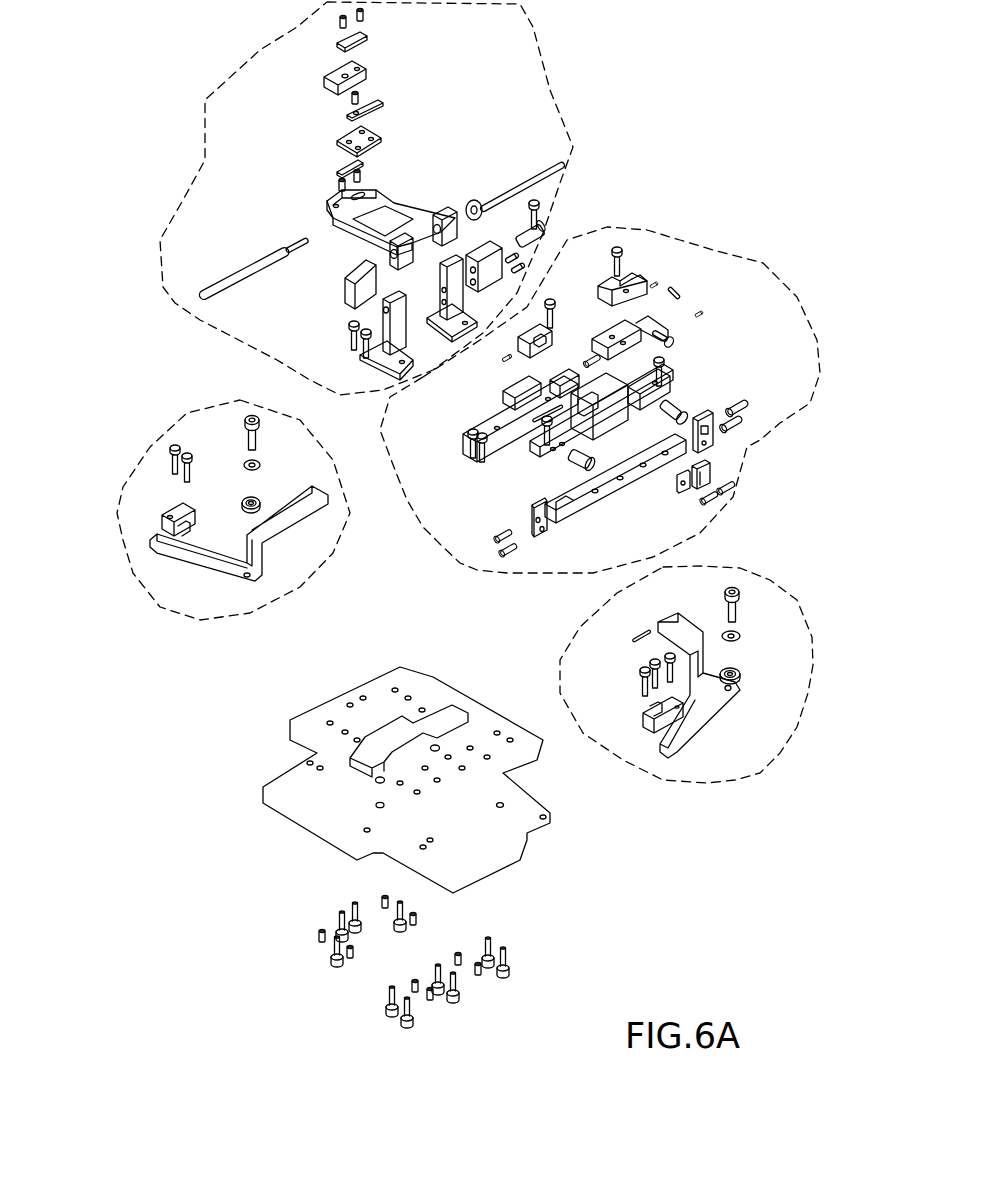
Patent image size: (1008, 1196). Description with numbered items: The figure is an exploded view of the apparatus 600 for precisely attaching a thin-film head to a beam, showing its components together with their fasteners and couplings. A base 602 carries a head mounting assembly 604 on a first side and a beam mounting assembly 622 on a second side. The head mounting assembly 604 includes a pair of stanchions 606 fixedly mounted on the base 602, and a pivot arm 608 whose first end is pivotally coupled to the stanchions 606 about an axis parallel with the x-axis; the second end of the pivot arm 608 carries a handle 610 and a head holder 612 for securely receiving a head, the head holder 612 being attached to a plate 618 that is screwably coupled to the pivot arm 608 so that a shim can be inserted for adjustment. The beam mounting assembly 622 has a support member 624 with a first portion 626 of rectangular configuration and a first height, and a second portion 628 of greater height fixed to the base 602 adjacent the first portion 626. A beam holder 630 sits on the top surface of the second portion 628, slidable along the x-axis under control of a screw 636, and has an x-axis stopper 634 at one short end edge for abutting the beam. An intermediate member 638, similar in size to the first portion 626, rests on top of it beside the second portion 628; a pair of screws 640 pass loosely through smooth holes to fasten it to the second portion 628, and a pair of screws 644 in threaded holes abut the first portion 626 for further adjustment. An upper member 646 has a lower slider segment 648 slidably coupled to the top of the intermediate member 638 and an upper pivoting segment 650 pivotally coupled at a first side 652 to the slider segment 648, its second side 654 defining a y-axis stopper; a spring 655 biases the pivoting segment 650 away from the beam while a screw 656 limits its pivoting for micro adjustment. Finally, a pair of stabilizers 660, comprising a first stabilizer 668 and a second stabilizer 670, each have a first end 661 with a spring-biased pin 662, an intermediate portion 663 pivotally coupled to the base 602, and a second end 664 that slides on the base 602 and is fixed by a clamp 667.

The apparatus 600 is at (747, 134).
The base 602 is at (322, 820).
The head mounting assembly 604 is at (163, 309).
The stanchions 606 is at (382, 352).
The pivot arm 608 is at (398, 207).
The handle 610 is at (238, 271).
The head holder 612 is at (412, 64).
The plate 618 is at (372, 128).
The beam mounting assembly 622 is at (803, 262).
The support member 624 is at (558, 520).
The first portion 626 is at (590, 510).
The second portion 628 is at (458, 440).
The beam holder 630 is at (500, 406).
The x-axis stopper 634 is at (548, 370).
The screw 636 is at (599, 324).
The intermediate member 638 is at (662, 398).
The screws 640 is at (700, 400).
The screws 644 is at (665, 362).
The upper member 646 is at (648, 282).
The lower slider segment 648 is at (620, 327).
The upper pivoting segment 650 is at (640, 276).
The first side 652 is at (603, 278).
The second side 654 is at (617, 276).
The spring 655 is at (676, 292).
The screw 656 is at (675, 334).
The stabilizers 660 is at (168, 630).
The first end 661 is at (306, 486).
The spring-biased pin 662 is at (640, 644).
The intermediate portion 663 is at (268, 565).
The second end 664 is at (155, 566).
The clamp 667 is at (172, 508).
The first stabilizer 668 is at (245, 634).
The second stabilizer 670 is at (677, 794).